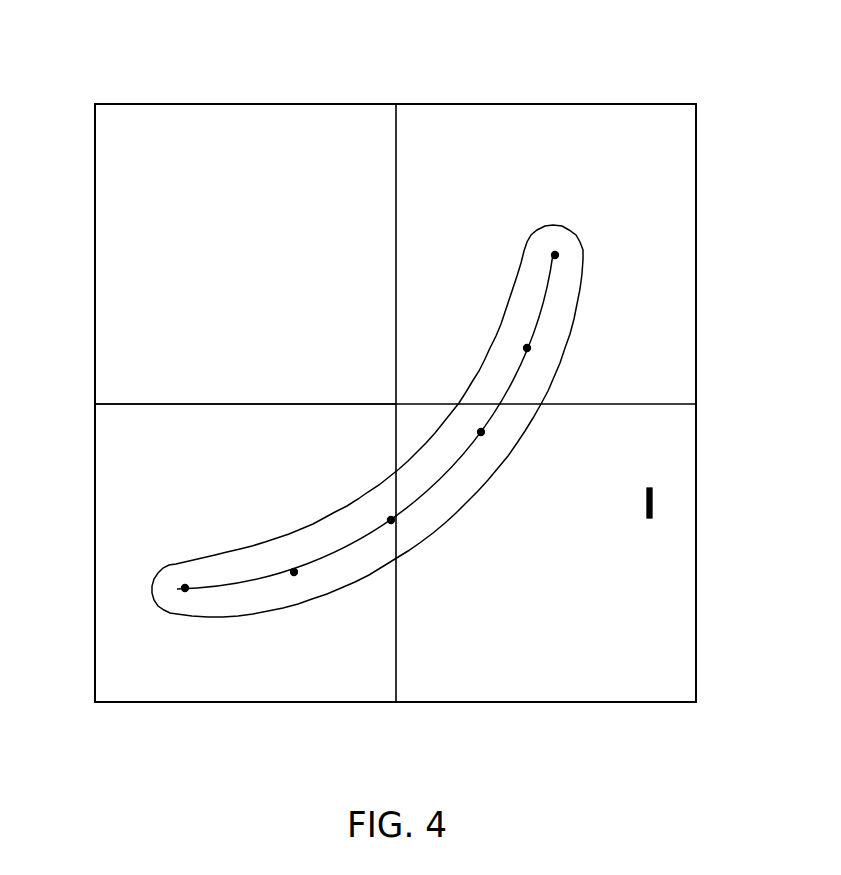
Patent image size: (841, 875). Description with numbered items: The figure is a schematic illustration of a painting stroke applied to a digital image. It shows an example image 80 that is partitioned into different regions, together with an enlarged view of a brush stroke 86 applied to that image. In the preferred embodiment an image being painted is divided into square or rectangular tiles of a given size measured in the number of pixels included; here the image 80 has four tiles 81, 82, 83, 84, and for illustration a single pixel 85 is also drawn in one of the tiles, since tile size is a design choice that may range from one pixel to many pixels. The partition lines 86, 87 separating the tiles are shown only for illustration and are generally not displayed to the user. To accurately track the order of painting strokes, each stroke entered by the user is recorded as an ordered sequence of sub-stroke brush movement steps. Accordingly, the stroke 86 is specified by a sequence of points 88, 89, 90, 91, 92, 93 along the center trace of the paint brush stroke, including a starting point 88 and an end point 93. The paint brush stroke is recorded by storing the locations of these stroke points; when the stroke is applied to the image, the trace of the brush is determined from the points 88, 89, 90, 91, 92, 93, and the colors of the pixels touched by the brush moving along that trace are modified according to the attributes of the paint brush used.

The image 80 is at (420, 103).
The tile 81 is at (173, 167).
The tile 82 is at (610, 167).
The tile 83 is at (149, 668).
The tile 84 is at (648, 662).
The pixel 85 is at (657, 500).
The brush stroke 86 is at (395, 177).
The partition line 87 is at (217, 395).
The starting point 88 is at (185, 588).
The stroke point 89 is at (294, 572).
The stroke point 90 is at (391, 520).
The stroke point 91 is at (481, 432).
The stroke point 92 is at (527, 348).
The end point 93 is at (555, 255).